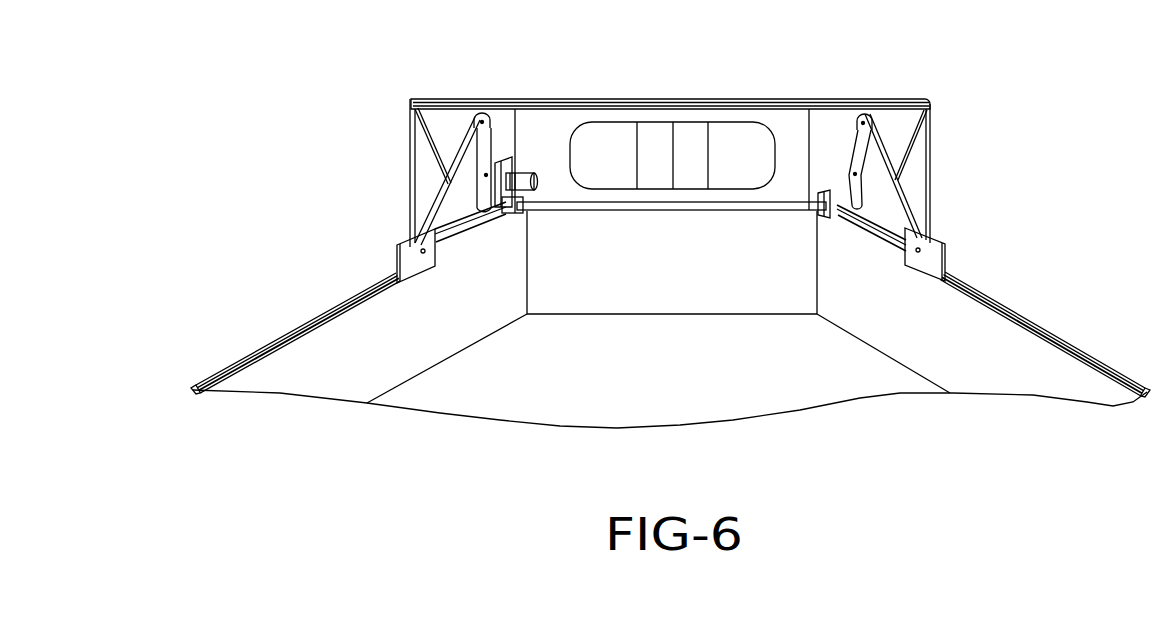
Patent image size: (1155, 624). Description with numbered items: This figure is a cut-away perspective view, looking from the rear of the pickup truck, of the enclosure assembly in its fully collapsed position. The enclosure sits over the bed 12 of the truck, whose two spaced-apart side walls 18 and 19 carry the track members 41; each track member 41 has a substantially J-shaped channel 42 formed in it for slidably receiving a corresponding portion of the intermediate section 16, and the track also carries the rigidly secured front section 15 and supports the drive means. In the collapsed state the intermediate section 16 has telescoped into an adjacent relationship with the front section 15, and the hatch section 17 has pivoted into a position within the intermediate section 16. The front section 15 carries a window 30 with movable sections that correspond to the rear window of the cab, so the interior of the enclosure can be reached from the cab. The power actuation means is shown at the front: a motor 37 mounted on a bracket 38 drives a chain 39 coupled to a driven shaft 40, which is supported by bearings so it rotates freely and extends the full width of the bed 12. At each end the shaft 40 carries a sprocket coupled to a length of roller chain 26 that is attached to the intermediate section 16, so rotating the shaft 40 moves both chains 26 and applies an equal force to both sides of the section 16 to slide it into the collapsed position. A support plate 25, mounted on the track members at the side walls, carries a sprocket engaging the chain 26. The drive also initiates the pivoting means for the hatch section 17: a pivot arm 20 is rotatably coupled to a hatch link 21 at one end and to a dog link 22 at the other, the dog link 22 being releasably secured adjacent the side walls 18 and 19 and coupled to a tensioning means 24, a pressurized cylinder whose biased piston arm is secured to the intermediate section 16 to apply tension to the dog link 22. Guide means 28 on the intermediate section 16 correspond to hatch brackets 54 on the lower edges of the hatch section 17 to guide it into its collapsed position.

The bed 12 is at (600, 300).
The front section 15 is at (432, 99).
The intermediate section 16 is at (414, 138).
The hatch section 17 is at (902, 125).
The side wall 18 is at (395, 362).
The side wall 19 is at (1020, 368).
The pivot arm 20 is at (857, 160).
The hatch link 21 is at (862, 120).
The dog link 22 is at (397, 244).
The tensioning means 24 is at (903, 206).
The support plate 25 is at (935, 258).
The drive chain 26 is at (860, 226).
The guide means 28 is at (432, 217).
The window 30 is at (690, 162).
The motor 37 is at (528, 184).
The bracket 38 is at (508, 162).
The chain 39 is at (486, 174).
The driven shaft 40 is at (620, 205).
The track member 41 is at (292, 330).
The channel 42 is at (196, 385).
The hatch bracket 54 is at (447, 183).